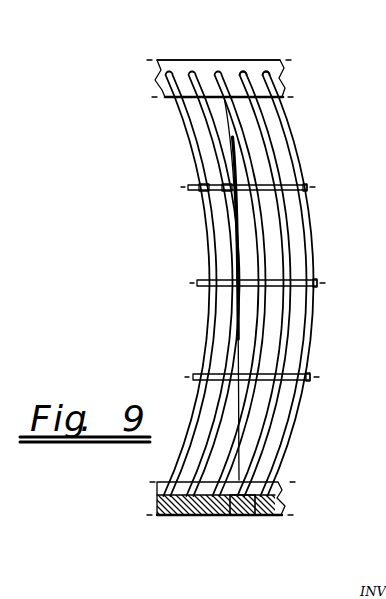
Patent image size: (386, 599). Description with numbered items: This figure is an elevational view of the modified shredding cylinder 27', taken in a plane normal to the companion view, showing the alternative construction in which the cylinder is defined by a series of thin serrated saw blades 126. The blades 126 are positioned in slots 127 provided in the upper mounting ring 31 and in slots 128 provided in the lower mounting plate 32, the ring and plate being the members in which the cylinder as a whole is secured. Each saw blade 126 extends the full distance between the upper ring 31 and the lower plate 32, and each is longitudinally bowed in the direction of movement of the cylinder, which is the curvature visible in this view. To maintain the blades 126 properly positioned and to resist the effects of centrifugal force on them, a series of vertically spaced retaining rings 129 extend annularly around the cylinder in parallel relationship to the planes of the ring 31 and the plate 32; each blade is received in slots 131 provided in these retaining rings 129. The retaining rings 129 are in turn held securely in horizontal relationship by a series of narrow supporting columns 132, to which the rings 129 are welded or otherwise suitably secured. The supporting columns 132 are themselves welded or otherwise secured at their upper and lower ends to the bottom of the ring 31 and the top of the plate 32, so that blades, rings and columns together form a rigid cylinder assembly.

The modified shredding cylinder 27' is at (183, 42).
The upper mounting ring 31 is at (186, 66).
The lower mounting plate 32 is at (170, 516).
The serrated saw blades 126 is at (242, 143).
The slots in upper mounting ring 127 is at (261, 80).
The slots in lower mounting plate 128 is at (251, 516).
The retaining rings 129 is at (314, 283).
The slots in retaining rings 131 is at (221, 188).
The supporting columns 132 is at (230, 157).